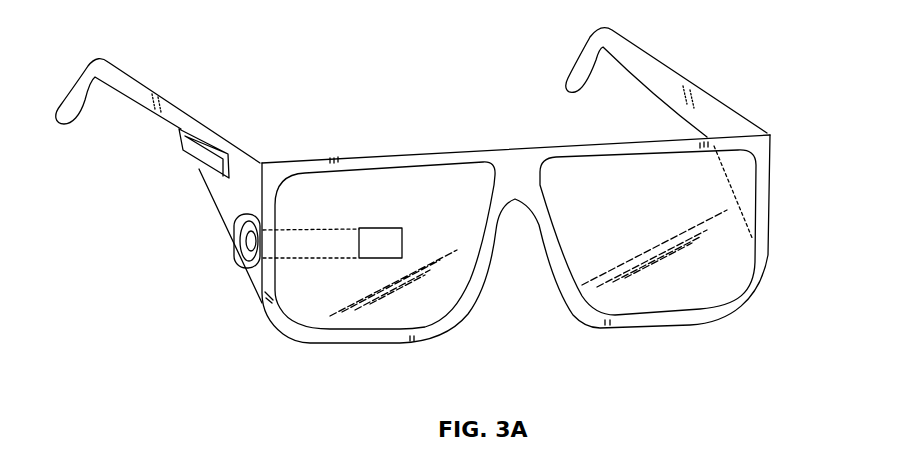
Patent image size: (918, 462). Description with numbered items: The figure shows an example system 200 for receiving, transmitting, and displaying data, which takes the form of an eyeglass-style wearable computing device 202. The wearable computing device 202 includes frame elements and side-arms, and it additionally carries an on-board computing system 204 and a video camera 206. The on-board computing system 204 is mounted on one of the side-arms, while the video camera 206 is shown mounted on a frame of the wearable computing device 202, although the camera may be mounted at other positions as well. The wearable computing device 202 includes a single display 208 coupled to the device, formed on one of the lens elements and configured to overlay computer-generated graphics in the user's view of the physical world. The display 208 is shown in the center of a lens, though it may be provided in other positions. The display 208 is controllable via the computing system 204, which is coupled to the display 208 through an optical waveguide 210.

The system 200 is at (432, 184).
The wearable computing device 202 is at (753, 326).
The on-board computing system 204 is at (187, 155).
The video camera 206 is at (234, 247).
The display 208 is at (388, 228).
The optical waveguide 210 is at (288, 264).